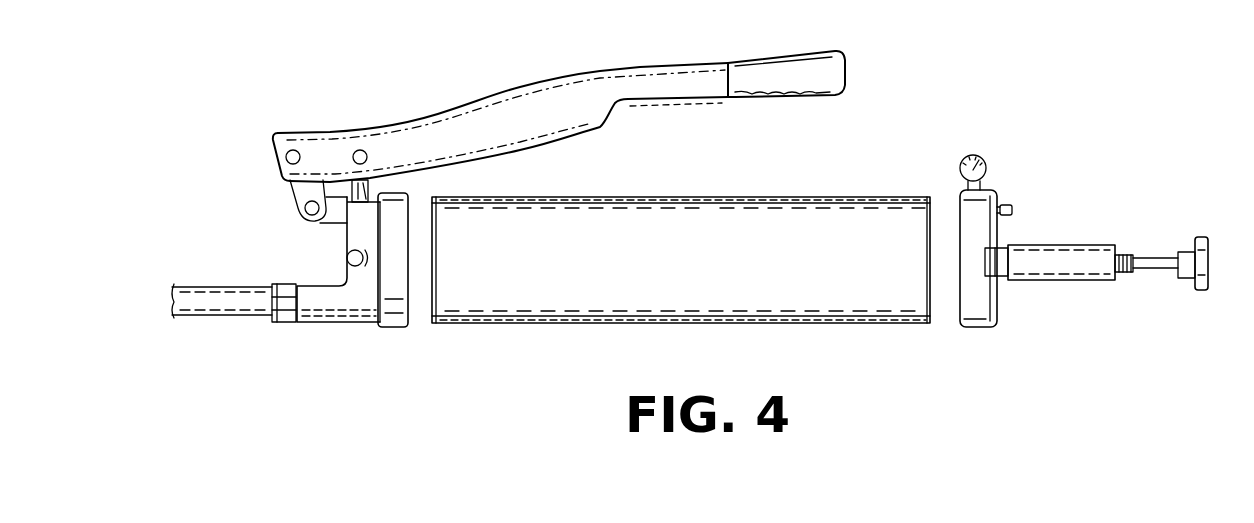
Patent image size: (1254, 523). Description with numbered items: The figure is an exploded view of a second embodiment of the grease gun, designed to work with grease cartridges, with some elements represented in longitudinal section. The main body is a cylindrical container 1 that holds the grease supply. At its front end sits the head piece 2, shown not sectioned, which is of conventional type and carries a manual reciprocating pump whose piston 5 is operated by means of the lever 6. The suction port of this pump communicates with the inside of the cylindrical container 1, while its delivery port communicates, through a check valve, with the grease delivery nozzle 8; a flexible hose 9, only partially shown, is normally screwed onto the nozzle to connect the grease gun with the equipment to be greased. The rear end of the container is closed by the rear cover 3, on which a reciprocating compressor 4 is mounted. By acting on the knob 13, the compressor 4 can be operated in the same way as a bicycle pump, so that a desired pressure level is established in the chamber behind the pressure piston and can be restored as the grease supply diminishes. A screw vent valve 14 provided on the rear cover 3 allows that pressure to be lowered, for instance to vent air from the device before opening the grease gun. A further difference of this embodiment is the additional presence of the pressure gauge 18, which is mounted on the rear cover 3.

The cylindrical container 1 is at (699, 228).
The head piece 2 is at (363, 325).
The rear cover 3 is at (978, 328).
The reciprocating compressor 4 is at (1070, 256).
The piston 5 is at (372, 178).
The lever 6 is at (584, 90).
The grease delivery nozzle 8 is at (296, 292).
The flexible hose 9 is at (200, 300).
The knob 13 is at (1208, 260).
The screw vent valve 14 is at (1012, 209).
The pressure gauge 18 is at (975, 156).